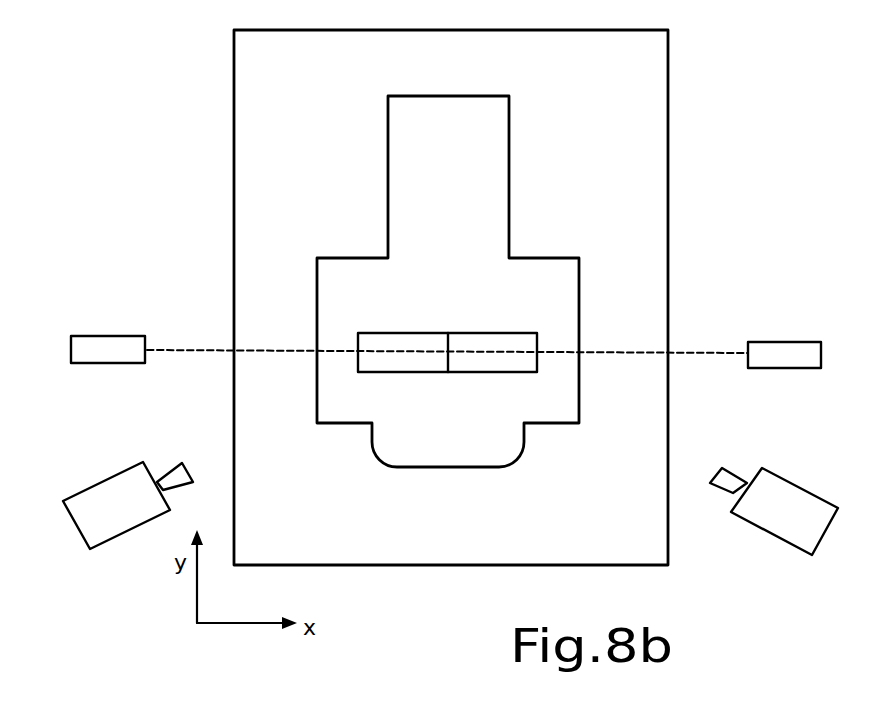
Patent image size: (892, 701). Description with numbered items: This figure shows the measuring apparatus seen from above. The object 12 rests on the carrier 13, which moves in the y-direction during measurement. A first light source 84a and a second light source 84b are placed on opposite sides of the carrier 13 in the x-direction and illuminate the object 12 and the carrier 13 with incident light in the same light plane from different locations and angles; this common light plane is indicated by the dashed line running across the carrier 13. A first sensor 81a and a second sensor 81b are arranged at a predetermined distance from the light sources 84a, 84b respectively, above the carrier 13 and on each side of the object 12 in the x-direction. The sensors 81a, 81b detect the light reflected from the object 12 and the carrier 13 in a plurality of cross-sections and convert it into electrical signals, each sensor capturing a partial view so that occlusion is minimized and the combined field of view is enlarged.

The carrier 13 is at (637, 88).
The object 12 is at (611, 302).
The first light source 84a is at (800, 356).
The second light source 84b is at (88, 355).
The first sensor 81a is at (767, 517).
The second sensor 81b is at (85, 518).